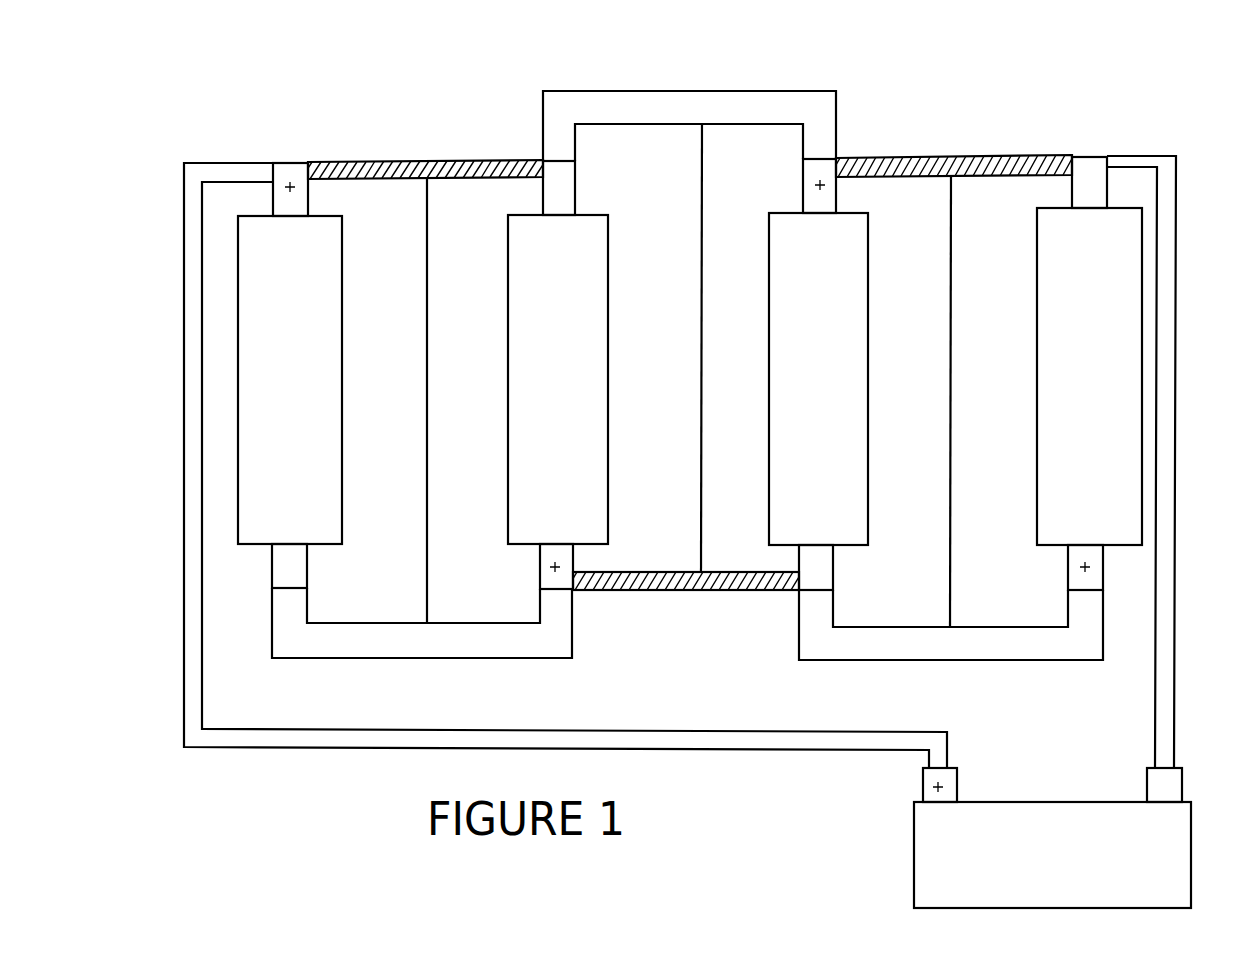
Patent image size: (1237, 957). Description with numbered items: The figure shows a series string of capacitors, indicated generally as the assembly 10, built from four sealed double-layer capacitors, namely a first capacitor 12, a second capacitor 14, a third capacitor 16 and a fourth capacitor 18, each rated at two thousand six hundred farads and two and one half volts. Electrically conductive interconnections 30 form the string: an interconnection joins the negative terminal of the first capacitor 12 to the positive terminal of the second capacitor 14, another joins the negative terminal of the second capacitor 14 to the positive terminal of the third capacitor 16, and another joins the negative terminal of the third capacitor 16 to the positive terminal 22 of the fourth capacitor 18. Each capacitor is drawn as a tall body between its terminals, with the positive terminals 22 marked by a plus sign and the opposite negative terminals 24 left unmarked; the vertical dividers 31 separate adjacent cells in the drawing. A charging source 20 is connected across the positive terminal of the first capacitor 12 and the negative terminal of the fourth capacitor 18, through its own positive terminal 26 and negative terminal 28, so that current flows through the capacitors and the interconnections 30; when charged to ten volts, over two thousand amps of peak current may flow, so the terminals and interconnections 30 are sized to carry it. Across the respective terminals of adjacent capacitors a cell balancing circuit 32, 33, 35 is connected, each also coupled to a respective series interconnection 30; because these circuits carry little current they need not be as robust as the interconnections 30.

The battery system 10 is at (370, 790).
The first capacitor 12 is at (308, 323).
The second capacitor 14 is at (558, 305).
The third capacitor 16 is at (835, 322).
The fourth capacitor 18 is at (1093, 407).
The charging source 20 is at (950, 838).
The positive terminal 22 is at (286, 187).
The negative terminal 24 is at (557, 186).
The positive terminal of power source 26 is at (957, 782).
The negative terminal of power source 28 is at (1165, 785).
The interconnections 30 is at (690, 108).
The divider 31 is at (427, 355).
The cell balancing circuit 32 is at (398, 172).
The cell balancing circuit 33 is at (657, 593).
The cell balancing circuit 35 is at (950, 160).